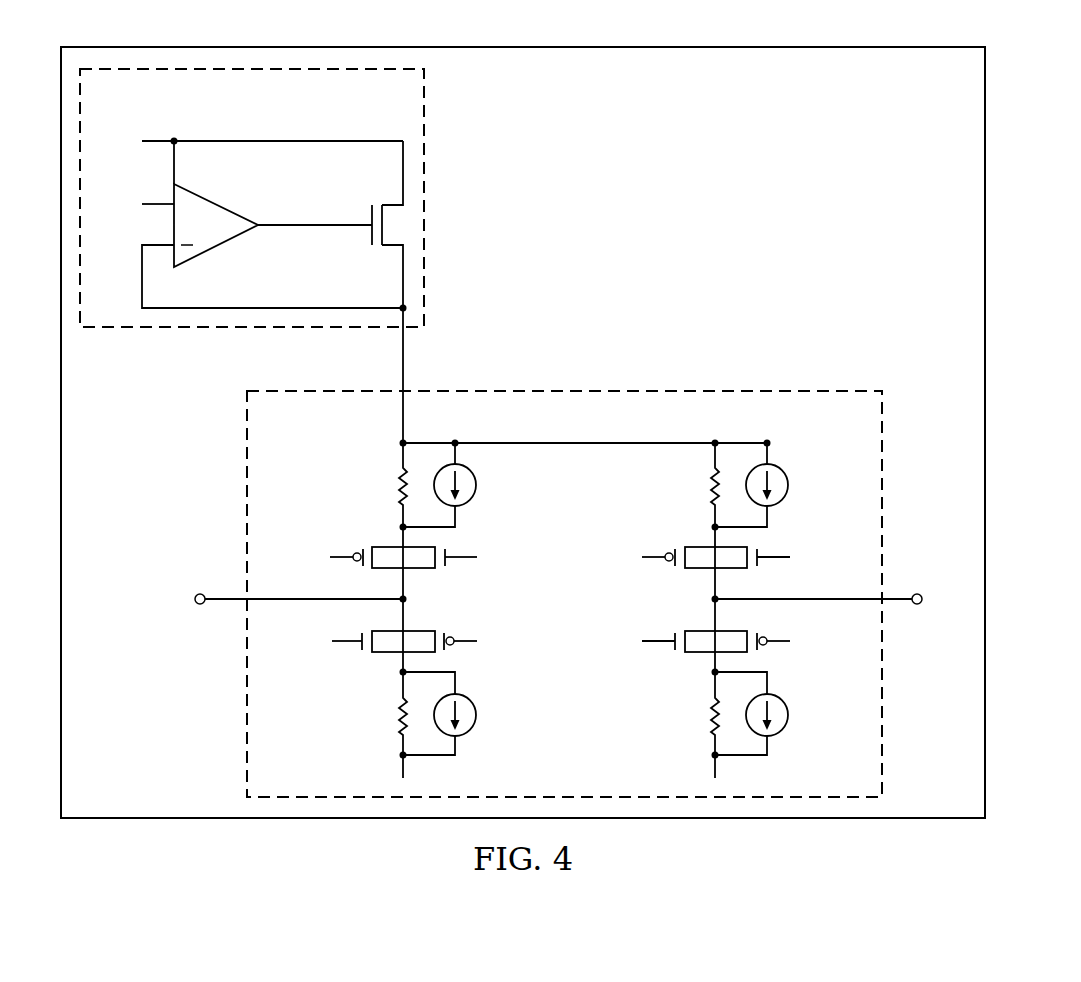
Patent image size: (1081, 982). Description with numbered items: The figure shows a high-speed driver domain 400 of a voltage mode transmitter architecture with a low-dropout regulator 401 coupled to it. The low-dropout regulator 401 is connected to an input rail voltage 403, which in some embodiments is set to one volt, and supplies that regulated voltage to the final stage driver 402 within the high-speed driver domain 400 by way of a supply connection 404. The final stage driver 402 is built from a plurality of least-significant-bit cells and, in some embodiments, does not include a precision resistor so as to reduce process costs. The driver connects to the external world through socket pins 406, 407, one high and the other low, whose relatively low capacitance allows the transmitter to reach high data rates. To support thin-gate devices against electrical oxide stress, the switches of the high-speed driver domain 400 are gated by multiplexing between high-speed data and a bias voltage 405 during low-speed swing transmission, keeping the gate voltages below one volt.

The high-speed driver domain 400 is at (992, 334).
The low-dropout regulator 401 is at (290, 198).
The final stage driver 402 is at (682, 386).
The input rail voltage 403 is at (272, 144).
The supply wire from LDO to driver 404 is at (402, 372).
The bias voltage 405 is at (340, 496).
The socket pin 406 is at (202, 608).
The socket pin 407 is at (918, 608).